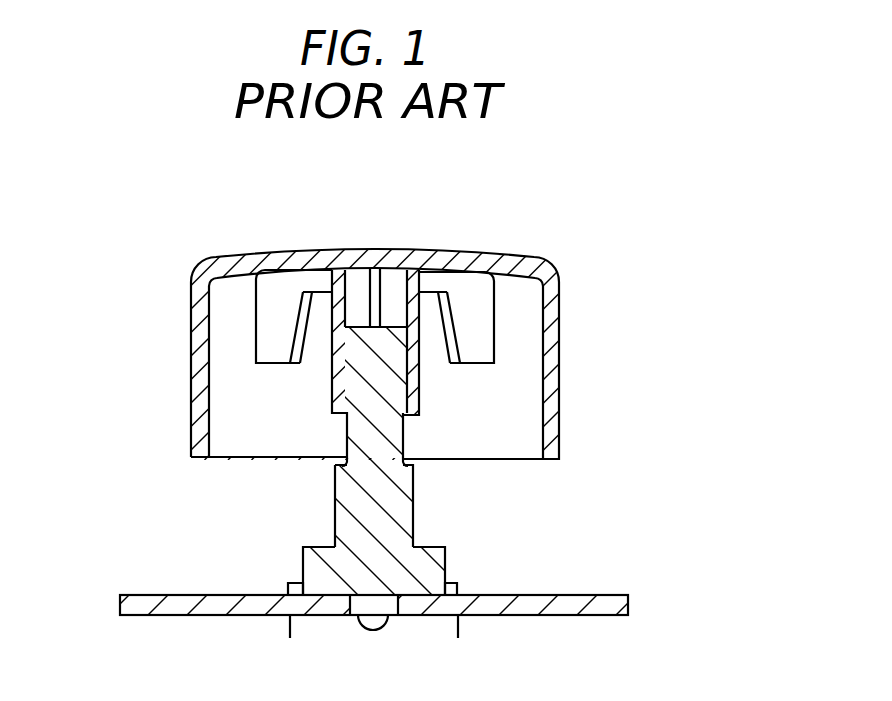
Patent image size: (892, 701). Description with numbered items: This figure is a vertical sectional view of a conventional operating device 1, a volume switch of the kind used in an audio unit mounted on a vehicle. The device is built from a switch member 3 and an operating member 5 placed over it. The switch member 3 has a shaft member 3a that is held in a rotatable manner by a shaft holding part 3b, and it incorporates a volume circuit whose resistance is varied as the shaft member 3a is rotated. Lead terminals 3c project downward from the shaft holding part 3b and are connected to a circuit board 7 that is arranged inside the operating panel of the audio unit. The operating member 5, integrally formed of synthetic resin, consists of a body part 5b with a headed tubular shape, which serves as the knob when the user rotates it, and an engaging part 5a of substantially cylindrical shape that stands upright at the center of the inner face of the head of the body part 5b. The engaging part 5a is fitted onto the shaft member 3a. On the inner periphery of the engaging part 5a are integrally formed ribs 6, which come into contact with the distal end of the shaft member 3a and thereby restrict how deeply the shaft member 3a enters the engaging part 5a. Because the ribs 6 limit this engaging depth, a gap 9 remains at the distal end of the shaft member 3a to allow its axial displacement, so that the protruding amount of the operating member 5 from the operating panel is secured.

The operating device 1 is at (558, 263).
The switch member 3 is at (430, 508).
The shaft member 3a is at (382, 384).
The shaft holding part 3b is at (448, 572).
The lead terminals 3c is at (458, 630).
The operating member 5 is at (162, 297).
The engaging part 5a is at (332, 384).
The body part 5b is at (560, 318).
The ribs (steps) 6 is at (358, 278).
The circuit board 7 is at (628, 600).
The gap 9 is at (397, 312).